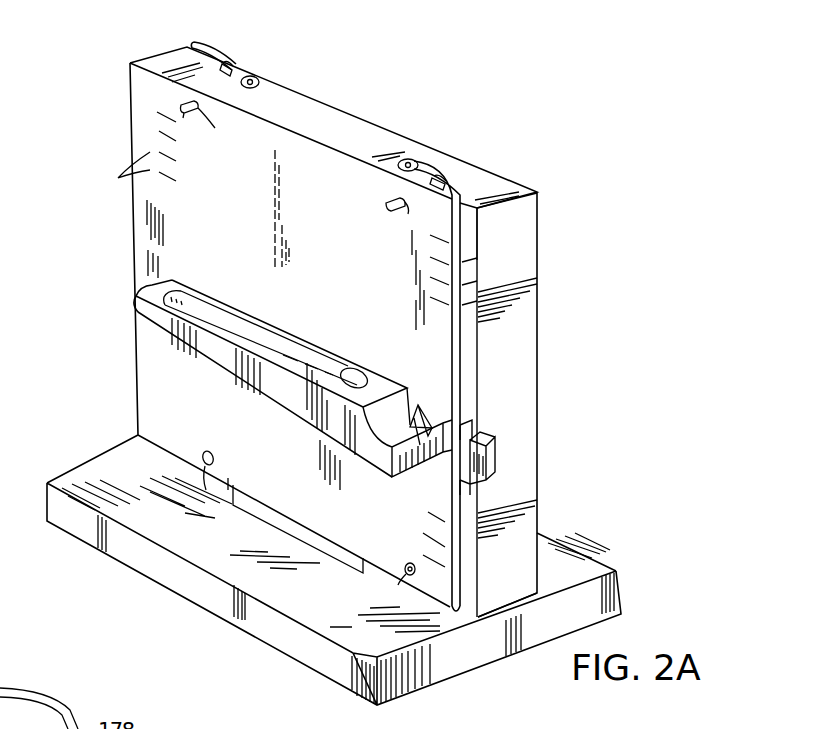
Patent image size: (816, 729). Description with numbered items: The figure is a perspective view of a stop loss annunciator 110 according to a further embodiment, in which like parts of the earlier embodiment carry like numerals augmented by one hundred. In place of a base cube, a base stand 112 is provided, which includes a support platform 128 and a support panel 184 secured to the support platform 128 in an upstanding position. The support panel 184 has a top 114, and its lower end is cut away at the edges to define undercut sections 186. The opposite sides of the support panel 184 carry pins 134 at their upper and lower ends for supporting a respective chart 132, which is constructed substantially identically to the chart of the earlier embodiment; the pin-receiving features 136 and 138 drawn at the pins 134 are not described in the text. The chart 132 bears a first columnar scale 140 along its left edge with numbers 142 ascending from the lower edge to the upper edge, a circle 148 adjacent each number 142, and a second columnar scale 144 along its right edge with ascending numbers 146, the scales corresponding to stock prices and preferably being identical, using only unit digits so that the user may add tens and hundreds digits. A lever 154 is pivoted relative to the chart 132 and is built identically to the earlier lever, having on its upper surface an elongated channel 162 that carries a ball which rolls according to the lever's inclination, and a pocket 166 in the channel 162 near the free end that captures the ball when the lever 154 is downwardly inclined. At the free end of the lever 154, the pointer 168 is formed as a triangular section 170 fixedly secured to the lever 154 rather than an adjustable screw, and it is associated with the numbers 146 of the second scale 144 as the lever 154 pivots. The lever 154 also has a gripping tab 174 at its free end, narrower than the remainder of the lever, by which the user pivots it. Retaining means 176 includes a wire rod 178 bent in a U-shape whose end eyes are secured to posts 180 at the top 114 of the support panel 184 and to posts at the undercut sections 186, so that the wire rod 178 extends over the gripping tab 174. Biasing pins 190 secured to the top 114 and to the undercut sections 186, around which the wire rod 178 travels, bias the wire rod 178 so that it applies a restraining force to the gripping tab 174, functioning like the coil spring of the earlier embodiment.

The stop loss annunciator 110 is at (77, 168).
The base stand 112 is at (552, 368).
The top 114 is at (372, 133).
The support platform 128 is at (331, 656).
The chart 132 is at (319, 147).
The pins 134 is at (192, 115).
The button slot 136 is at (315, 170).
The button stem 138 is at (205, 495).
The first columnar scale 140 is at (146, 128).
The numbers 142 is at (118, 174).
The second columnar scale 144 is at (477, 244).
The numbers 146 is at (467, 300).
The circle 148 is at (188, 185).
The lever 154 is at (289, 417).
The channel 162 is at (248, 335).
The pocket 166 is at (350, 376).
The pointer 168 is at (420, 403).
The triangular section 170 is at (411, 466).
The gripping tab 174 is at (486, 458).
The retaining means 176 is at (462, 363).
The wire rod 178 is at (190, 50).
The posts 180 is at (250, 76).
The support panel 184 is at (543, 284).
The undercut sections 186 is at (222, 483).
The biasing pins 190 is at (227, 66).